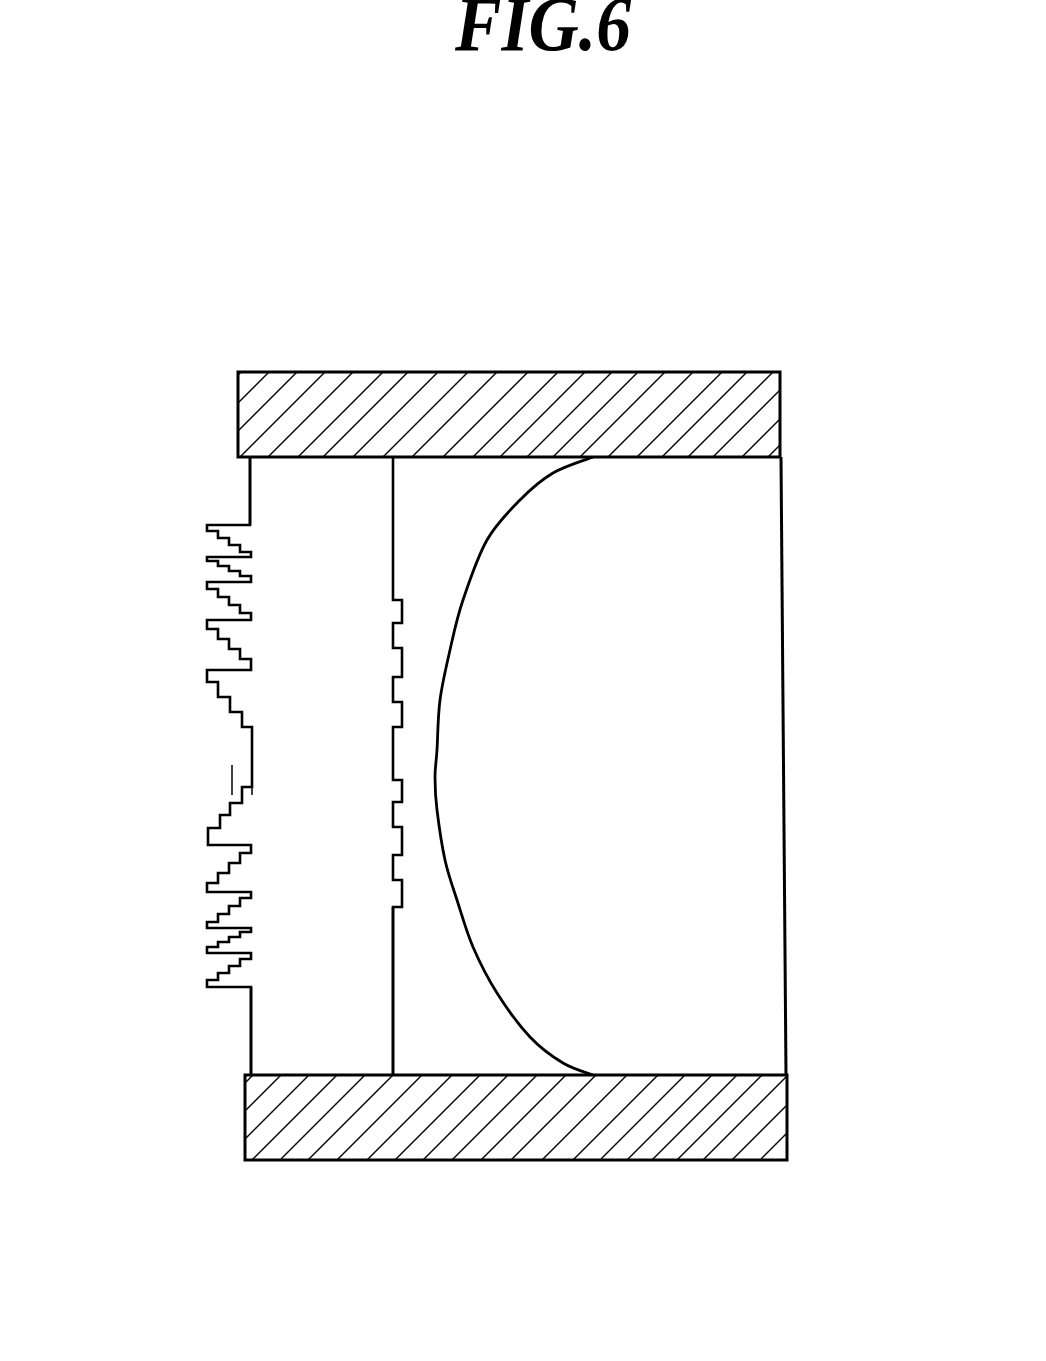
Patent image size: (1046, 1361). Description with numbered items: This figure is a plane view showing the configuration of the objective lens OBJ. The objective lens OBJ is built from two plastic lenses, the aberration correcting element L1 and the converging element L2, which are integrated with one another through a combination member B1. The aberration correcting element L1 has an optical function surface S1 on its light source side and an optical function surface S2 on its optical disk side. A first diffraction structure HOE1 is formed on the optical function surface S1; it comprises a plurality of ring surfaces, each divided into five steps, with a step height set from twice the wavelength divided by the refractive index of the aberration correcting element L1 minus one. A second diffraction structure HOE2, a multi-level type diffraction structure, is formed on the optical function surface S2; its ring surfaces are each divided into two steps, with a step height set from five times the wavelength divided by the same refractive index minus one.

The objective lens OBJ is at (314, 762).
The aberration correcting element L1 is at (294, 791).
The converging element L2 is at (523, 530).
The combination member B1 is at (730, 372).
The first diffraction structure HOE1 is at (197, 682).
The second diffraction structure HOE2 is at (405, 920).
The optical function surface S1 is at (252, 1050).
The optical function surface S2 is at (397, 1057).